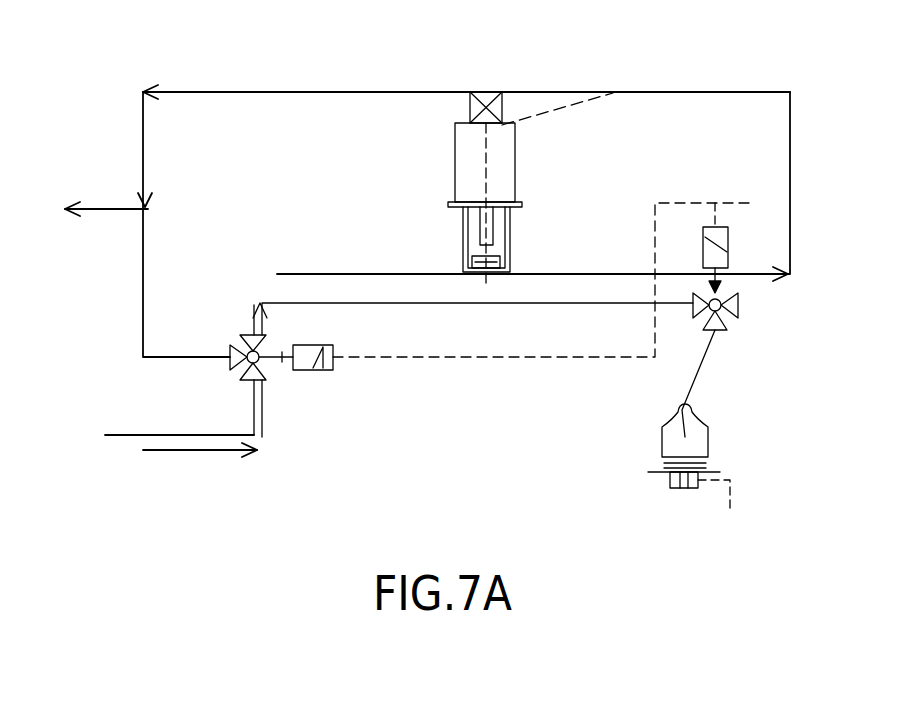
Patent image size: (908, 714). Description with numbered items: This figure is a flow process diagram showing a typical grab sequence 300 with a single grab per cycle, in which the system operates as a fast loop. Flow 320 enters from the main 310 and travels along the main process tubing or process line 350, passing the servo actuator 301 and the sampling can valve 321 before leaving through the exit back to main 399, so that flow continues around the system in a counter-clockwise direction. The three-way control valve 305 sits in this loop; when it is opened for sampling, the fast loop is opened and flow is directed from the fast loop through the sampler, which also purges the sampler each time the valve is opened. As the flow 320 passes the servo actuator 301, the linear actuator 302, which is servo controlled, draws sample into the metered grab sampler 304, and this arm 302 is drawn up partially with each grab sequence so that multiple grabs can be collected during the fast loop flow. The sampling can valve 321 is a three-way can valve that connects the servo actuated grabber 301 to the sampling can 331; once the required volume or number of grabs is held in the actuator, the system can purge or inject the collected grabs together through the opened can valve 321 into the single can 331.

The grab sequence 300 is at (490, 92).
The servo actuator 301 is at (455, 178).
The linear actuator 302 is at (510, 247).
The metered grab sampler 304 is at (463, 241).
The 3-way control valve 305 is at (262, 378).
The main 310 is at (203, 452).
The flow 320 is at (790, 200).
The sampling can valve 321 is at (740, 306).
The sampling can 331 is at (708, 445).
The process line 350 is at (767, 92).
The exit back to main 399 is at (97, 208).